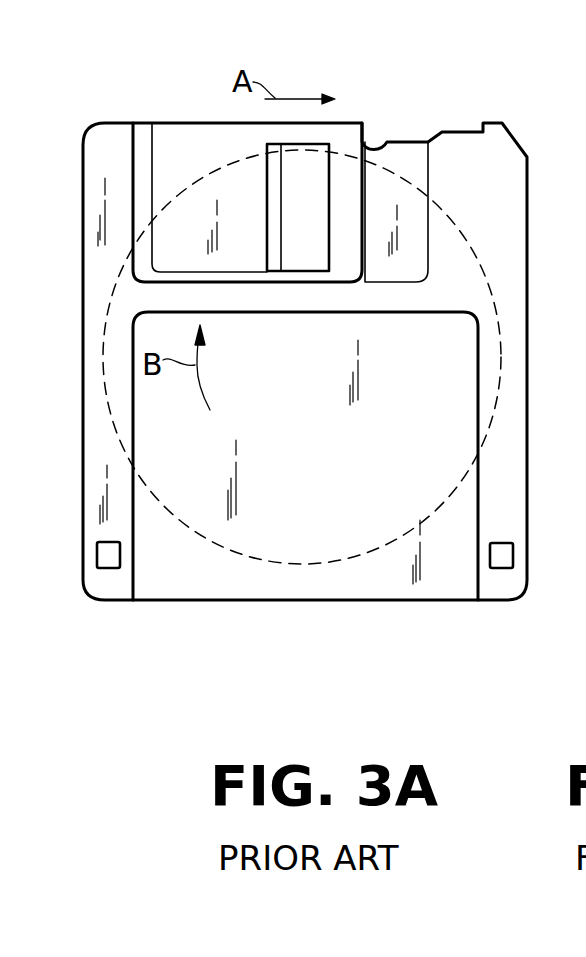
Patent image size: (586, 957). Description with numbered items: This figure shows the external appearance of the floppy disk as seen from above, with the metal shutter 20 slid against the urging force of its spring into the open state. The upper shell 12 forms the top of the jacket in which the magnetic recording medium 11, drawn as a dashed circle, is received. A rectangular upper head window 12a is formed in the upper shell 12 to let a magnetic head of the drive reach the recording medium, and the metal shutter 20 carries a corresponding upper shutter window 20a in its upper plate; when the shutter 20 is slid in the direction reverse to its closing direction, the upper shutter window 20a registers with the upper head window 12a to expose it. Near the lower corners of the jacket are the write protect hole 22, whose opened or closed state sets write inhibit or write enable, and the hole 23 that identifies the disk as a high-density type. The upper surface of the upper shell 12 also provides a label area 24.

The magnetic recording medium 11 is at (112, 432).
The upper shell 12 is at (393, 600).
The upper head window 12a is at (312, 207).
The metal shutter 20 is at (257, 123).
The upper shutter window 20a is at (265, 203).
The write protect hole 22 is at (105, 569).
The hole 23 is at (505, 568).
The label area 24 is at (277, 510).